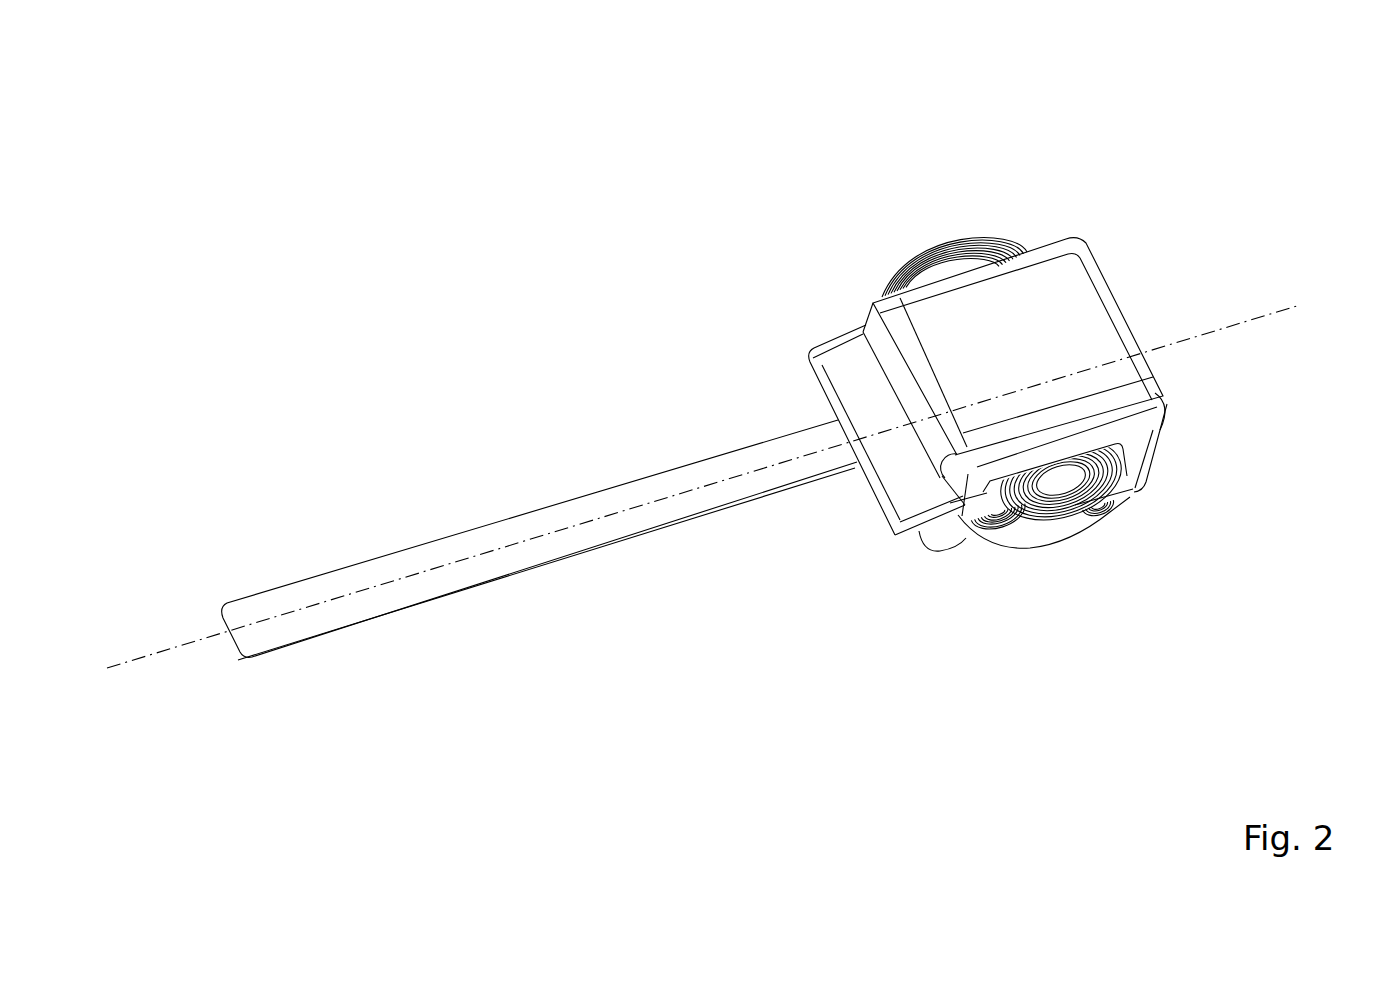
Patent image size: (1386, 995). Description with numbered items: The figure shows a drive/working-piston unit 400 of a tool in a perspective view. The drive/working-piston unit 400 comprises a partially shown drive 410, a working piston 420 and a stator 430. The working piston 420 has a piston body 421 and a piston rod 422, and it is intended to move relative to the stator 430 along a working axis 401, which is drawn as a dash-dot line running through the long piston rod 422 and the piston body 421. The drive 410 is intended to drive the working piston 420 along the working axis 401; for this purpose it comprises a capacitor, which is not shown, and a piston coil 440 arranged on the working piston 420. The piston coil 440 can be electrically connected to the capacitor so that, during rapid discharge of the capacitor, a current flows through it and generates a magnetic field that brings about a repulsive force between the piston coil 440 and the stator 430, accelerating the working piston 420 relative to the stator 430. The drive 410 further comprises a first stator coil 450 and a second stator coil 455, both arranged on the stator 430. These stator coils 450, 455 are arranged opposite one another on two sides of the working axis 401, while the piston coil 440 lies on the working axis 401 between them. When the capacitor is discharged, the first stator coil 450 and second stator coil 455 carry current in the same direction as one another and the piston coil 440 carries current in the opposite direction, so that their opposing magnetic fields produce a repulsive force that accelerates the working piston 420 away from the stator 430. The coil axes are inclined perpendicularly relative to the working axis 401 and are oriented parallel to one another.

The drive/working-piston unit 400 is at (207, 104).
The working axis 401 is at (153, 642).
The drive 410 is at (1143, 686).
The working piston 420 is at (722, 700).
The piston body 421 is at (905, 468).
The piston rod 422 is at (667, 508).
The stator 430 is at (1055, 292).
The piston coil 440 is at (990, 530).
The first stator coil 450 is at (1110, 513).
The second stator coil 455 is at (1069, 533).